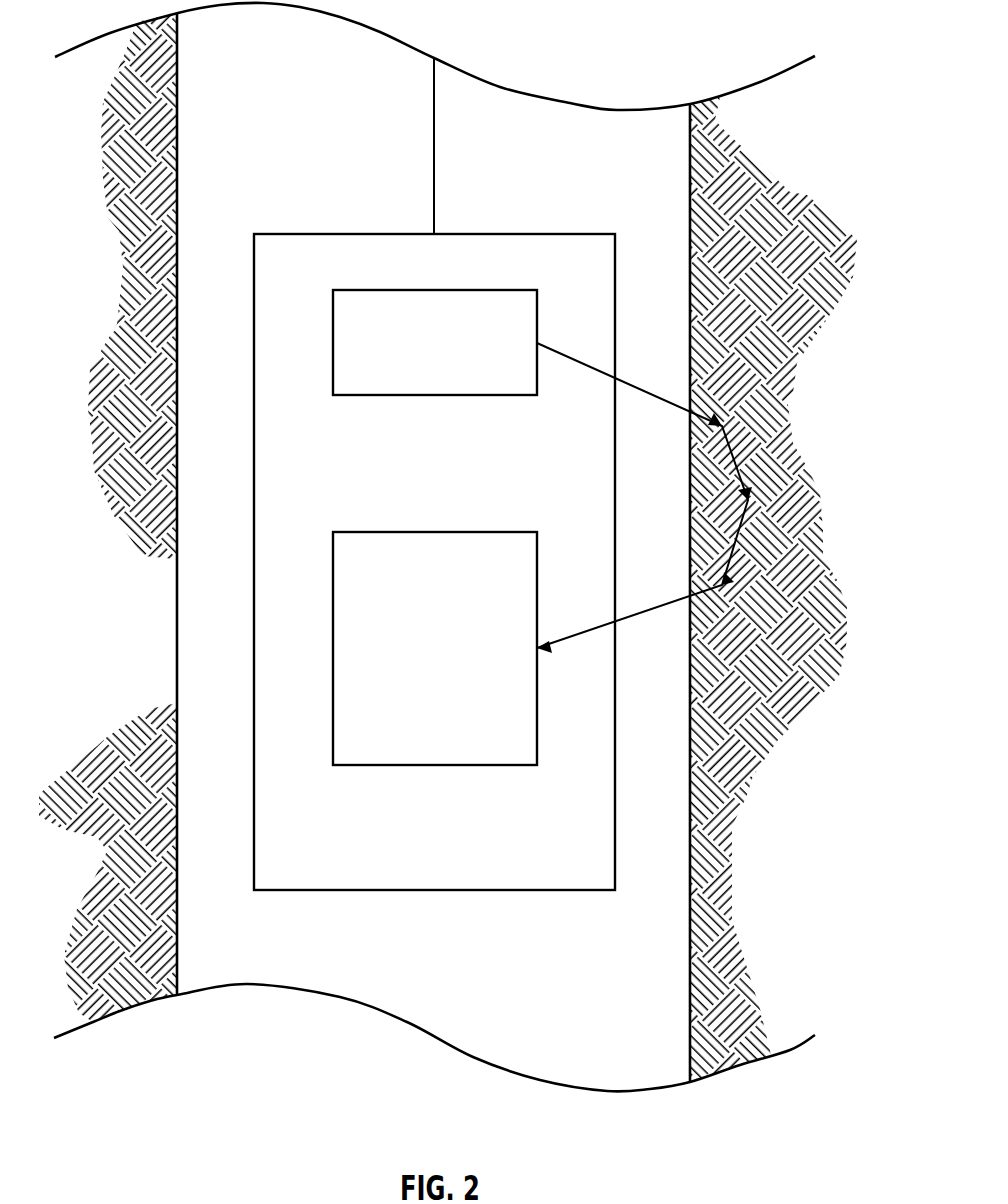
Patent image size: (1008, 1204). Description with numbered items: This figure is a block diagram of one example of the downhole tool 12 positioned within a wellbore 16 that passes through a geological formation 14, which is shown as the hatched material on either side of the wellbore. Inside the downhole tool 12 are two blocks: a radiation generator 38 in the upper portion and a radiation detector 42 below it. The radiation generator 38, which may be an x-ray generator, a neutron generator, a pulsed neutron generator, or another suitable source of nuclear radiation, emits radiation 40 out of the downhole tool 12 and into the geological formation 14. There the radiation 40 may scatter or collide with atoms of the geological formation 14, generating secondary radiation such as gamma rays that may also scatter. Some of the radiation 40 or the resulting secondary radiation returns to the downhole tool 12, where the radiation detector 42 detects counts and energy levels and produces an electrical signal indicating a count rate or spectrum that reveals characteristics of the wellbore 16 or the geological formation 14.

The downhole tool 12 is at (250, 240).
The geological formation 14 is at (760, 208).
The wellbore 16 is at (530, 155).
The radiation generator 38 is at (482, 289).
The radiation 40 is at (740, 465).
The radiation detector 42 is at (482, 531).